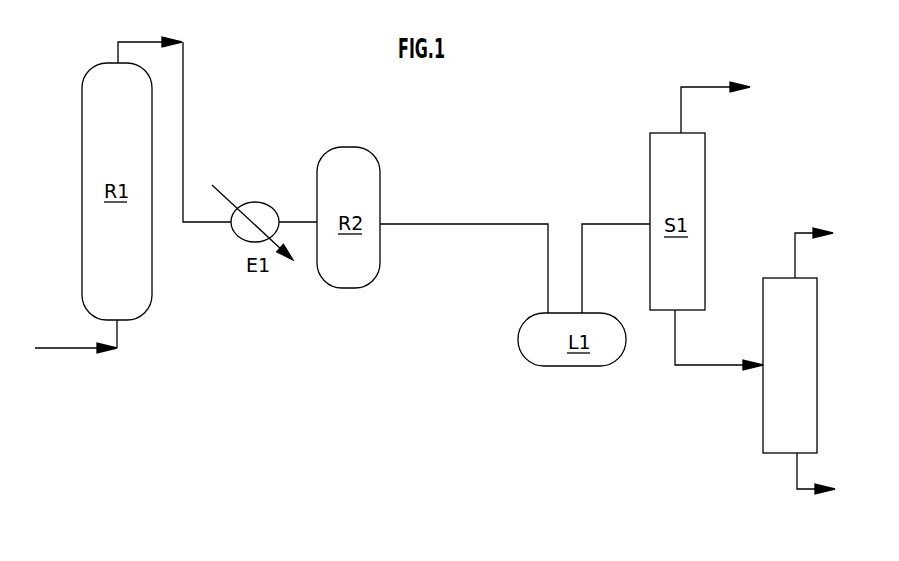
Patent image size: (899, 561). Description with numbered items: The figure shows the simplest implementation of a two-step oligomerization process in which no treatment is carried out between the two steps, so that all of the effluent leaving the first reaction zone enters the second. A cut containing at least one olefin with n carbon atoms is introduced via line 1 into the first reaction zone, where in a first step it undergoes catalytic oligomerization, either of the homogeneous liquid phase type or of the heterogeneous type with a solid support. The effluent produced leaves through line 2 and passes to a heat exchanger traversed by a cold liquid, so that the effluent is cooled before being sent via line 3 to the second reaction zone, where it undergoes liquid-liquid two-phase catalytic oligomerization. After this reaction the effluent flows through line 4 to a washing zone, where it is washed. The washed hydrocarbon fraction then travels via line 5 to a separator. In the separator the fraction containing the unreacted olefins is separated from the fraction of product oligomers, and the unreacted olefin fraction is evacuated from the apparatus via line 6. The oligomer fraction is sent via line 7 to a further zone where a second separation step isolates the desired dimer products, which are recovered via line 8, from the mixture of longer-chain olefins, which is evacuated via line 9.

The line 1 is at (90, 350).
The line 2 is at (149, 26).
The line 3 is at (304, 219).
The line 4 is at (492, 222).
The line 5 is at (610, 222).
The line 6 is at (692, 86).
The line 7 is at (718, 370).
The line 8 is at (800, 232).
The line 9 is at (797, 481).